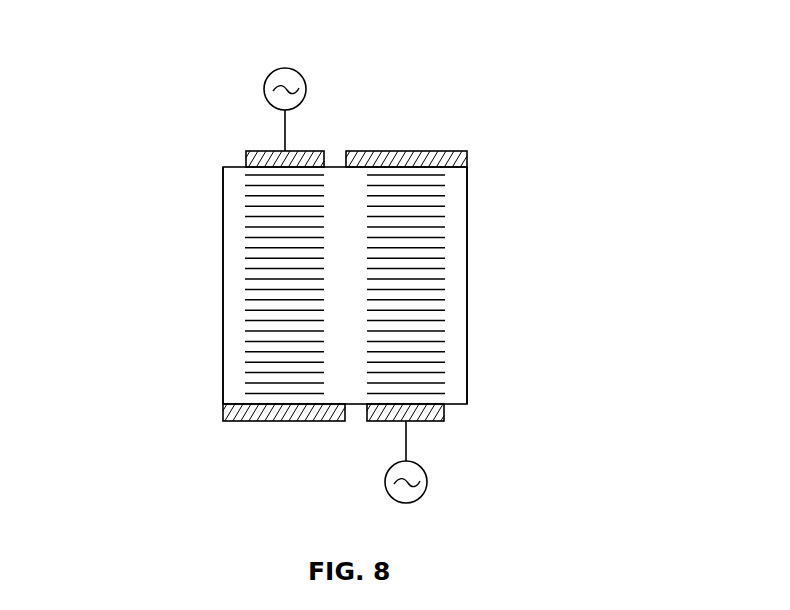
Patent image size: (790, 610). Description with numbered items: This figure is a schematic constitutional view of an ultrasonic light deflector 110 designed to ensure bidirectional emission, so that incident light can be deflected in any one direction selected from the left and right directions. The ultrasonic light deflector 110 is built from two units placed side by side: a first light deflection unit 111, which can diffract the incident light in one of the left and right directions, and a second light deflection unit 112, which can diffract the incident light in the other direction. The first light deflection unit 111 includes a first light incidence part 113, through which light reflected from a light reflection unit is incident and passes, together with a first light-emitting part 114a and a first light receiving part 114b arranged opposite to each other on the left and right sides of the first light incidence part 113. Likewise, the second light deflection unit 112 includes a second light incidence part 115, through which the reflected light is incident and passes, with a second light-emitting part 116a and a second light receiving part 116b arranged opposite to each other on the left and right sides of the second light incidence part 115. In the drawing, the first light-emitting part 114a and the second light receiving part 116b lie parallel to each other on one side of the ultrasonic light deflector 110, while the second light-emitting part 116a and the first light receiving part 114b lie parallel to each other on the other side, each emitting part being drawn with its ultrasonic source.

The ultrasonic light deflector 110 is at (197, 163).
The first light deflection unit 111 is at (467, 257).
The second light deflection unit 112 is at (223, 252).
The first light incidence part 113 is at (467, 323).
The second light incidence part 115 is at (223, 345).
The first light-emitting part 114a is at (433, 422).
The first light receiving part 114b is at (422, 150).
The second light-emitting part 116a is at (258, 150).
The second light receiving part 116b is at (270, 422).